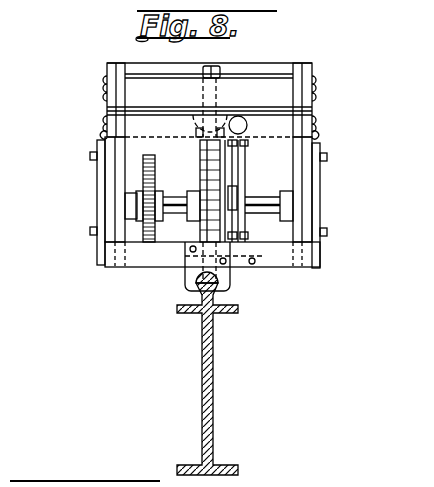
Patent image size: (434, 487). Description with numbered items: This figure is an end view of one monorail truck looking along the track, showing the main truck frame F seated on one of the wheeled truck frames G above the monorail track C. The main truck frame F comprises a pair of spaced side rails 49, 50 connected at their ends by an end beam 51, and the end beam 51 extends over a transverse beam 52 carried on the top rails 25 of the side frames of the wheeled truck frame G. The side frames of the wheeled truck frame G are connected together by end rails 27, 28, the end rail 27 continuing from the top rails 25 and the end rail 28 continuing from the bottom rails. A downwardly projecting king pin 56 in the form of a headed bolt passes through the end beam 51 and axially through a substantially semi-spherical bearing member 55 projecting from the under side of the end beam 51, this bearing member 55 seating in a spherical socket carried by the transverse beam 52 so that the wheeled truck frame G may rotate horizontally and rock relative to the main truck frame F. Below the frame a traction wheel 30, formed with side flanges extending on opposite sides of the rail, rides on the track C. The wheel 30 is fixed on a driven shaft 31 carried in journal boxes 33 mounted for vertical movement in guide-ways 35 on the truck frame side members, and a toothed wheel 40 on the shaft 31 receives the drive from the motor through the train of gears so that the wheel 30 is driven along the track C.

The side rail 49 is at (113, 82).
The end beam 51 is at (135, 90).
The side rail 50 is at (306, 92).
The king pin 56 is at (216, 67).
The end rail 27 is at (130, 125).
The top rail 25 is at (104, 118).
The transverse beam 52 is at (178, 112).
The semi-spherical bearing member 55 is at (225, 110).
The journal box 33 is at (98, 190).
The guide-way 35 is at (103, 208).
The end rail 28 is at (138, 258).
The toothed wheel 40 is at (155, 168).
The driven shaft 31 is at (170, 204).
The traction wheel 30 is at (205, 231).
The main truck frame F is at (101, 60).
The wheeled truck frame G is at (97, 131).
The monorail track C is at (203, 300).